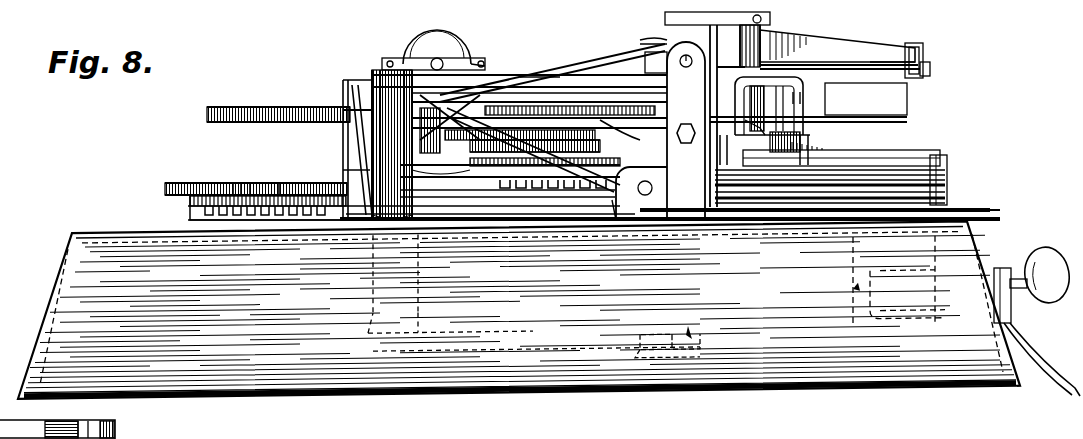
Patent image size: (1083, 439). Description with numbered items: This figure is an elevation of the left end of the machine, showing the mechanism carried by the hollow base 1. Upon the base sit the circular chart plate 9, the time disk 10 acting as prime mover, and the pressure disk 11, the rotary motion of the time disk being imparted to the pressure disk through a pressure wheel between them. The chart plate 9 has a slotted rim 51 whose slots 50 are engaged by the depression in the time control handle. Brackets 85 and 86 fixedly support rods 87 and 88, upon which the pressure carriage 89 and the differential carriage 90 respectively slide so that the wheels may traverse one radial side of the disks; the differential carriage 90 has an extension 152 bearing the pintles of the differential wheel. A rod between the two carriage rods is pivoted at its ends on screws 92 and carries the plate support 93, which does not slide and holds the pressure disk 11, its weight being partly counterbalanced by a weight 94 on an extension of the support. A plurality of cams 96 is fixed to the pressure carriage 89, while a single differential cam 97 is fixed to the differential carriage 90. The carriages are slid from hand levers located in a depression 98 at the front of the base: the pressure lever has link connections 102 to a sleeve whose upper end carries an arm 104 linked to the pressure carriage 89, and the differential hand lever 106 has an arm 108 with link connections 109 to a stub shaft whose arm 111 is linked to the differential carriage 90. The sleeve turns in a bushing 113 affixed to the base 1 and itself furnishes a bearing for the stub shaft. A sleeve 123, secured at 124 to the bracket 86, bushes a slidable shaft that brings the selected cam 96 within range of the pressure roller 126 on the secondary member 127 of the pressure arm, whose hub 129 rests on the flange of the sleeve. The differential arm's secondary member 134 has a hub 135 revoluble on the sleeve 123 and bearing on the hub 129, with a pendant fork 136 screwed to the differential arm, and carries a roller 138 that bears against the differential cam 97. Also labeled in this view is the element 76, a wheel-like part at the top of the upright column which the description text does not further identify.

The hollow base 1 is at (62, 252).
The circular chart plate 9 is at (165, 187).
The time disk 10 is at (280, 184).
The pressure disk 11 is at (207, 111).
The slots 50 is at (250, 184).
The slotted rim 51 is at (190, 199).
The wheel column 76 is at (418, 46).
The bracket 85 is at (686, 202).
The bracket 86 is at (668, 37).
The rod 87 is at (640, 190).
The rod 88 is at (645, 58).
The pressure carriage 89 is at (612, 205).
The differential carriage 90 is at (602, 56).
The screws 92 is at (683, 124).
The plate support 93 is at (640, 130).
The weight 94 is at (907, 100).
The cams 96 is at (947, 180).
The differential cam 97 is at (875, 62).
The depression 98 is at (860, 282).
The link connections 102 is at (282, 394).
The arm 104 is at (486, 117).
The differential hand lever 106 is at (1014, 272).
The arm 108 is at (780, 354).
The link connections 109 is at (547, 345).
The arm 111 is at (536, 68).
The bushing 113 is at (362, 172).
The sleeve 123 is at (84, 429).
The securing point 124 is at (752, 19).
The pressure roller 126 is at (975, 210).
The secondary member 127 is at (870, 158).
The hub 129 is at (800, 98).
The secondary member 134 is at (830, 44).
The hub 135 is at (752, 44).
The pendant fork 136 is at (800, 108).
The roller 138 is at (933, 67).
The extension 152 is at (492, 58).